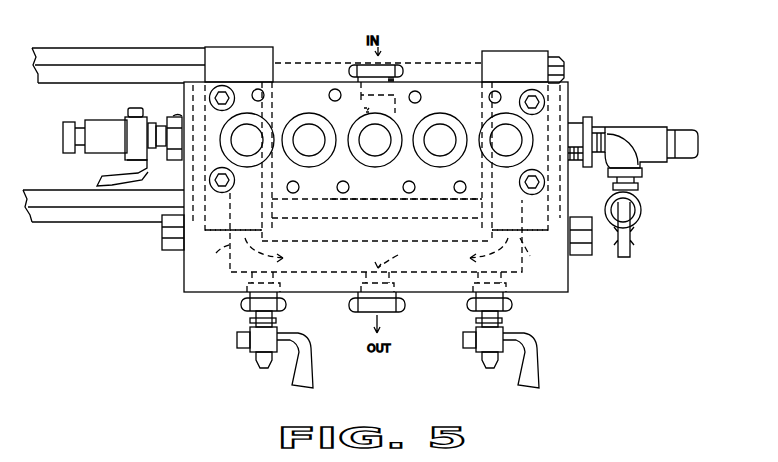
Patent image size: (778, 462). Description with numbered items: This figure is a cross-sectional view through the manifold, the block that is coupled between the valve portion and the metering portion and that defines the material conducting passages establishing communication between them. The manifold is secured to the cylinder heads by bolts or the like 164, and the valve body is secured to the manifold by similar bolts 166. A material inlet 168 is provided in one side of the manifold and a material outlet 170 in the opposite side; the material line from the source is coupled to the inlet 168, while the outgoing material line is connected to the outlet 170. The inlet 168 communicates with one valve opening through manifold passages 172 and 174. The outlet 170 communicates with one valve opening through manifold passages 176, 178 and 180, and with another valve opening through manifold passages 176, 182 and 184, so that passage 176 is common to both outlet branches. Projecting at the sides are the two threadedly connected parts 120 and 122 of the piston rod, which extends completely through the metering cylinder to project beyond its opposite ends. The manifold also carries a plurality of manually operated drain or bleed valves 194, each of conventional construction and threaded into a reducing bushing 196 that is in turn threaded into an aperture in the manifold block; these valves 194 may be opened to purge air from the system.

The piston rod part 120 is at (97, 128).
The piston rod part 122 is at (648, 133).
The bolts 164 is at (225, 88).
The bolts 166 is at (334, 89).
The material inlet 168 is at (398, 68).
The material outlet 170 is at (398, 309).
The manifold passage 172 is at (364, 112).
The manifold passage 174 is at (385, 148).
The manifold passage 176 is at (350, 245).
The manifold passage 178 is at (233, 245).
The manifold passage 180 is at (254, 133).
The manifold passage 182 is at (520, 238).
The manifold passage 184 is at (497, 135).
The drain or bleed valves 194 is at (96, 177).
The reducing bushing 196 is at (172, 117).